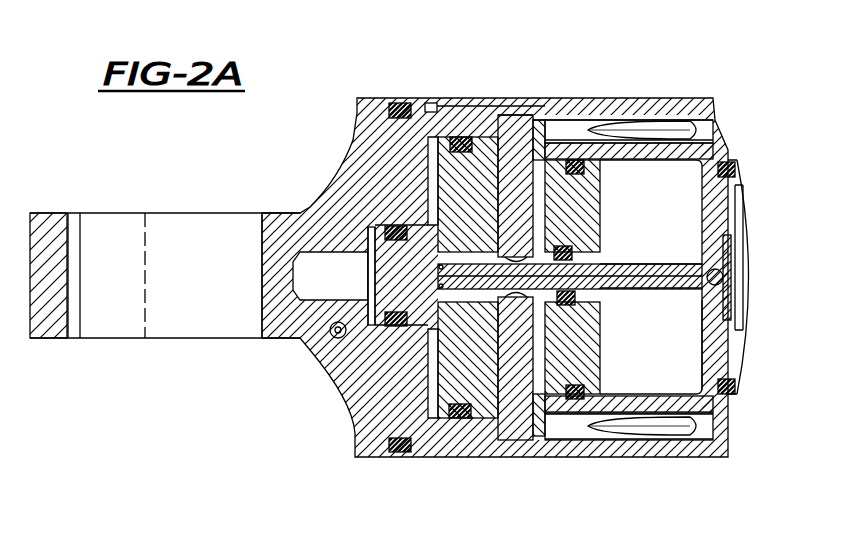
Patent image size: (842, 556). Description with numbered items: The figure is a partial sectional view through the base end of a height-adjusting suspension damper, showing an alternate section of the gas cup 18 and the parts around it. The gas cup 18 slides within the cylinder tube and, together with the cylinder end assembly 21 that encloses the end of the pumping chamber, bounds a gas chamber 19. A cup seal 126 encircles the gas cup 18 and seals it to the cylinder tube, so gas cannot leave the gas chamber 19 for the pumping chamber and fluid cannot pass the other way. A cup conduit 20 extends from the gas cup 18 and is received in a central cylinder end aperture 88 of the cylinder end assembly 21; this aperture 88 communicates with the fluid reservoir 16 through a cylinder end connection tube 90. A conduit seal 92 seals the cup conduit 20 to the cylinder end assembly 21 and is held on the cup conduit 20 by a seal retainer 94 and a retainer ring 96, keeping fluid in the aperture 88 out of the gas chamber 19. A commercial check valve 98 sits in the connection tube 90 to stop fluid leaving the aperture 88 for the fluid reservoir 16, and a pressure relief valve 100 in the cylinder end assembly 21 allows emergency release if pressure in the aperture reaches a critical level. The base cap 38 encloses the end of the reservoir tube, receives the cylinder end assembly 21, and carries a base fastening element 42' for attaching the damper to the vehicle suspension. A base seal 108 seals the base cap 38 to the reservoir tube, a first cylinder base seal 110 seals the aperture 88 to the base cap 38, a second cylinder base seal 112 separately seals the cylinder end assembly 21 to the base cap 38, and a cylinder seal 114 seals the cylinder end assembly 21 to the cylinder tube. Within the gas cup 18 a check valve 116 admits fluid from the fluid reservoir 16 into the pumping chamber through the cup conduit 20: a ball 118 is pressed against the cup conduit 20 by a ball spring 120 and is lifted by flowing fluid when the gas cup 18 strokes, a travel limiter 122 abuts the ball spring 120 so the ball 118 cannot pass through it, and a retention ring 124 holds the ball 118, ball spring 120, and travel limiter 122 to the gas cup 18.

The fluid reservoir 16 is at (598, 445).
The gas cup 18 is at (738, 384).
The gas chamber 19 is at (658, 324).
The cup conduit 20 is at (657, 250).
The cylinder end assembly 21 is at (523, 106).
The base cap 38 is at (343, 173).
The base fastening element 42' is at (165, 244).
The central cylinder end aperture 88 is at (373, 452).
The cylinder end connection tube 90 is at (562, 105).
The conduit seal 92 is at (598, 214).
The seal retainer 94 is at (598, 340).
The retainer ring 96 is at (598, 262).
The commercial check valve 98 is at (483, 118).
The pressure relief valve 100 is at (512, 447).
The base seal 108 is at (403, 100).
The first cylinder base seal 110 is at (390, 245).
The second cylinder base seal 112 is at (456, 418).
The cylinder seal 114 is at (572, 405).
The check valve 116 is at (752, 268).
The ball 118 is at (745, 289).
The ball spring 120 is at (700, 343).
The travel limiter 122 is at (731, 194).
The retention ring 124 is at (740, 320).
The cup seal 126 is at (742, 395).